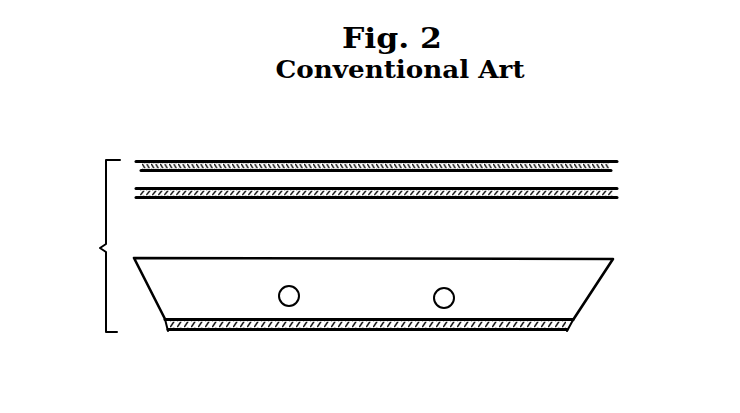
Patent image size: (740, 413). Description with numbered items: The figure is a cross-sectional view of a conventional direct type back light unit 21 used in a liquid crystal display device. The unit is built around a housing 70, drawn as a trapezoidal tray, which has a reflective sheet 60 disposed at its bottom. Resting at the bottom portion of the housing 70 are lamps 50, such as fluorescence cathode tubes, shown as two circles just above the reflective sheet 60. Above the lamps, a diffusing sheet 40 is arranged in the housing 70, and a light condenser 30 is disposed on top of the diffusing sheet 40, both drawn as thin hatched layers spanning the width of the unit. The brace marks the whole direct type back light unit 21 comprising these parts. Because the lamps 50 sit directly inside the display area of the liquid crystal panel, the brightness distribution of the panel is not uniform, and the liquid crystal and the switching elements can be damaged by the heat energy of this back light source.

The direct type back light unit 21 is at (81, 246).
The light condenser 30 is at (293, 159).
The diffusing sheet 40 is at (530, 189).
The lamp 50 is at (283, 306).
The reflective sheet 60 is at (543, 333).
The housing 70 is at (636, 292).